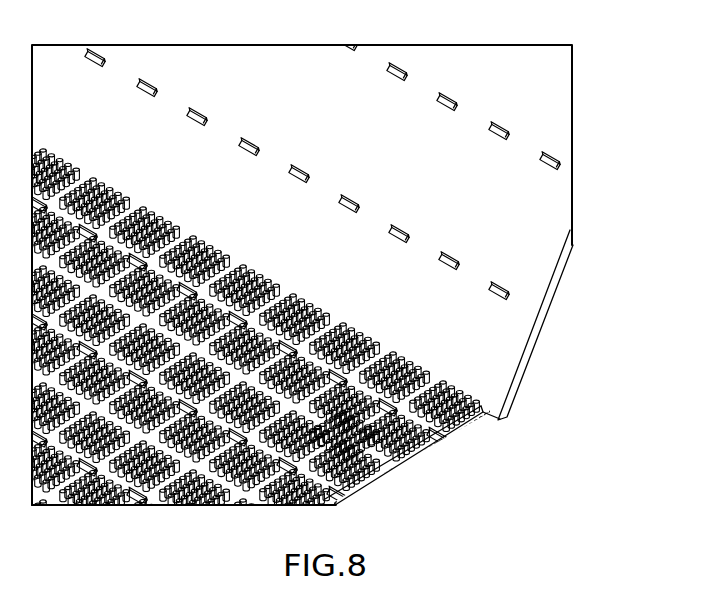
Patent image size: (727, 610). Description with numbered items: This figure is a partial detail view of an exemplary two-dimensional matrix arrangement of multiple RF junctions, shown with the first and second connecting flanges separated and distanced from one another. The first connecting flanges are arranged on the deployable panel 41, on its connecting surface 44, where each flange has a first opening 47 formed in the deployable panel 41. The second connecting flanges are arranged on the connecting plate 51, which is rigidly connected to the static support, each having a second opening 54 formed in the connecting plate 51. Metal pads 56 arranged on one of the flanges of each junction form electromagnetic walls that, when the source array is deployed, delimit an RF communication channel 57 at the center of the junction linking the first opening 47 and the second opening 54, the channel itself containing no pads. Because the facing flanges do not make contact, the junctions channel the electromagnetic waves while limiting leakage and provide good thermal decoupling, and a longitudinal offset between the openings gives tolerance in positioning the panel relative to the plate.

The deployable panel 41 is at (578, 254).
The connecting surface 44 is at (504, 349).
The first opening 47 is at (514, 299).
The connecting plate 51 is at (416, 468).
The second opening 54 is at (448, 428).
The metal pads 56 is at (434, 446).
The RF communication channel 57 is at (359, 432).